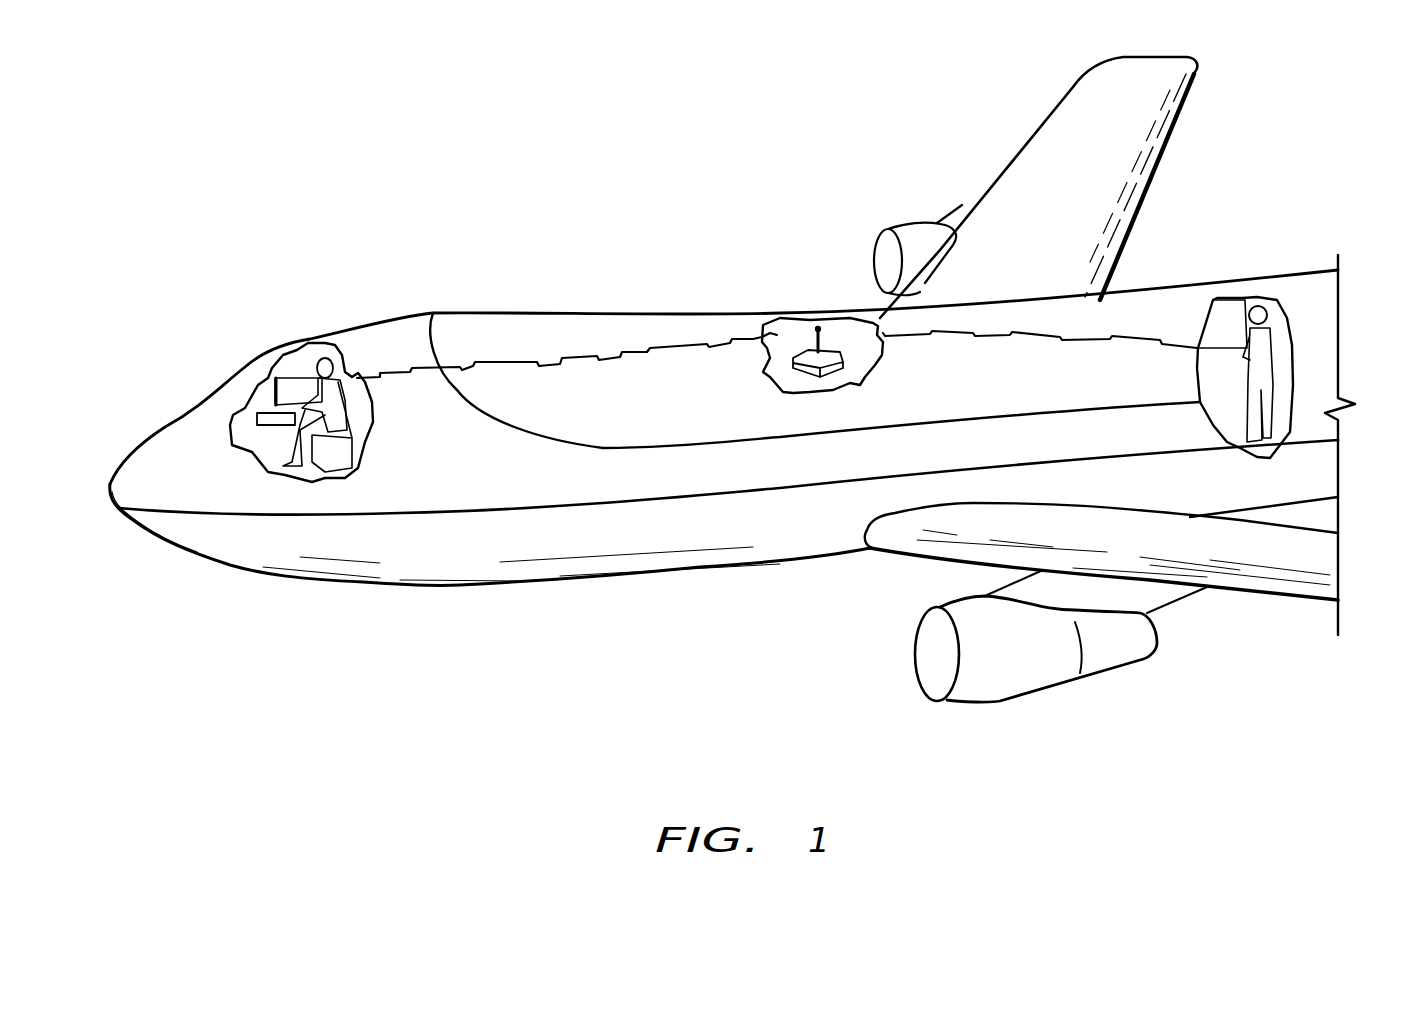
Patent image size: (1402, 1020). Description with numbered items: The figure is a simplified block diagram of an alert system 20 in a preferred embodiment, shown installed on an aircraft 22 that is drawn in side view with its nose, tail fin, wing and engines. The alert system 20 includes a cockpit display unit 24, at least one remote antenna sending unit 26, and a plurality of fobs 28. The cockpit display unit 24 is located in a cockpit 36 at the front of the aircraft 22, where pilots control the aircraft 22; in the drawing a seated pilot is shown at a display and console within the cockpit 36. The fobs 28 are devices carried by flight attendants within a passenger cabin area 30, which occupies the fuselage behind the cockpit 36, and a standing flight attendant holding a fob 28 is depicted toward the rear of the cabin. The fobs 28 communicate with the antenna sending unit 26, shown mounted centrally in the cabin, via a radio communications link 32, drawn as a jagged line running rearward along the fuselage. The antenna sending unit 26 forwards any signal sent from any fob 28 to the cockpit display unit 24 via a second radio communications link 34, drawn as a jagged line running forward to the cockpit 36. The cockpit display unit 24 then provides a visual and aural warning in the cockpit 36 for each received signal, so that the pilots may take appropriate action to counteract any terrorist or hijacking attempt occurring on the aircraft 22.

The alert system 20 is at (277, 117).
The aircraft 22 is at (492, 309).
The cockpit display unit 24 is at (255, 447).
The remote antenna sending unit 26 is at (765, 373).
The fobs 28 is at (1215, 330).
The passenger cabin area 30 is at (860, 408).
The radio communications link 32 is at (990, 343).
The radio communications link 34 is at (585, 348).
The cockpit 36 is at (312, 331).